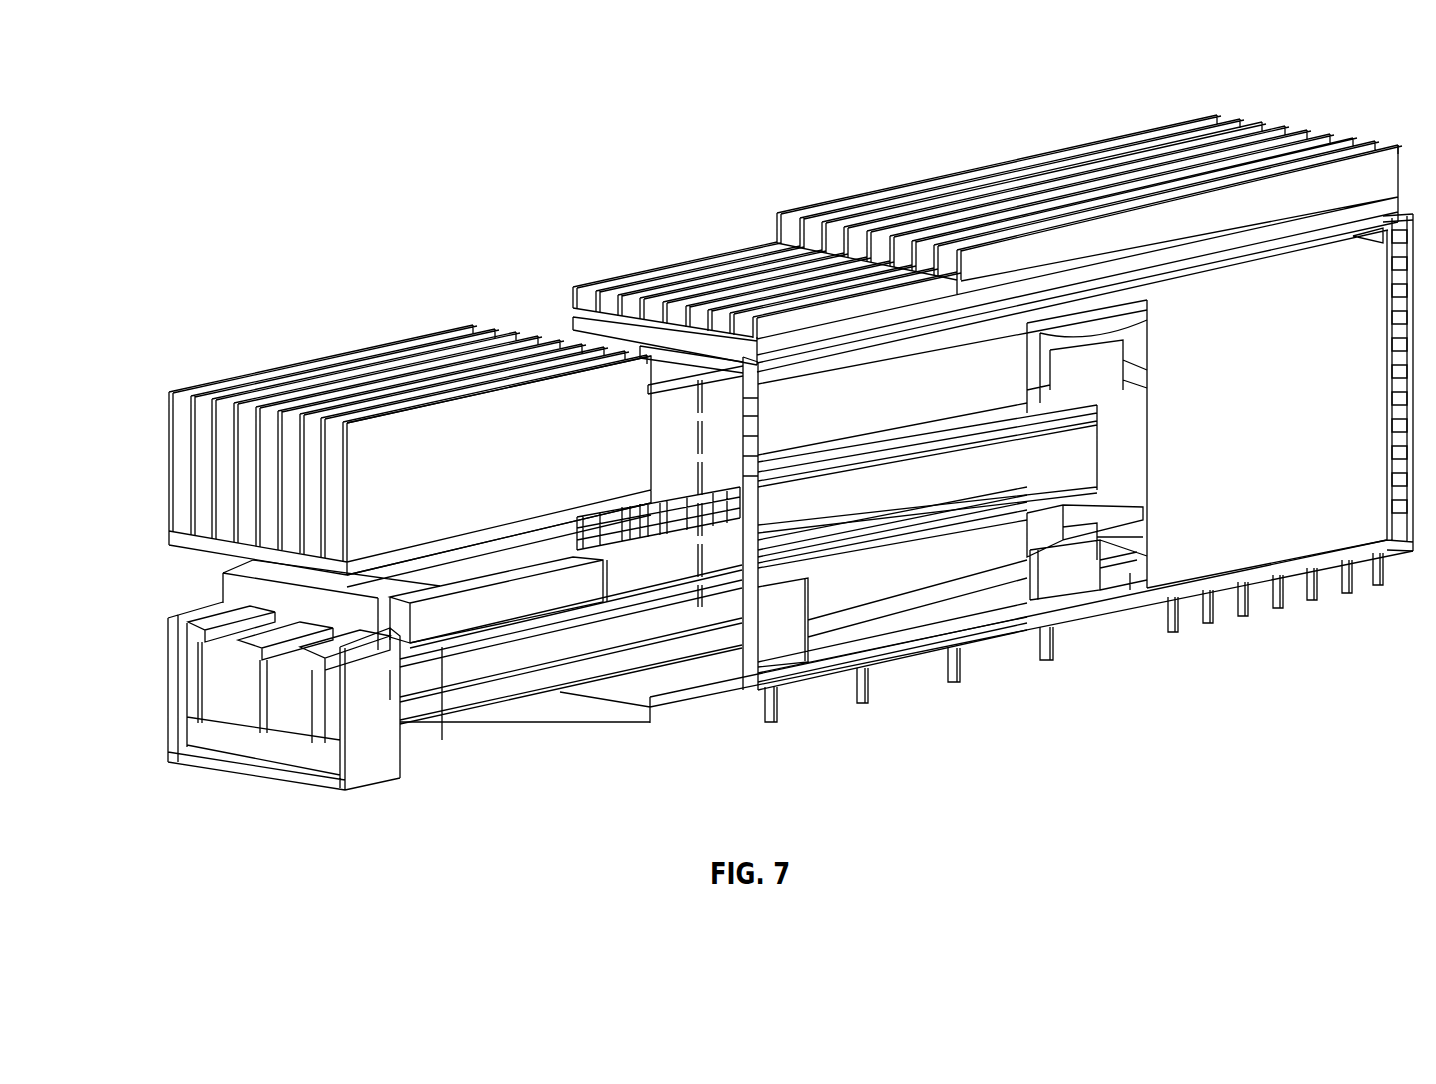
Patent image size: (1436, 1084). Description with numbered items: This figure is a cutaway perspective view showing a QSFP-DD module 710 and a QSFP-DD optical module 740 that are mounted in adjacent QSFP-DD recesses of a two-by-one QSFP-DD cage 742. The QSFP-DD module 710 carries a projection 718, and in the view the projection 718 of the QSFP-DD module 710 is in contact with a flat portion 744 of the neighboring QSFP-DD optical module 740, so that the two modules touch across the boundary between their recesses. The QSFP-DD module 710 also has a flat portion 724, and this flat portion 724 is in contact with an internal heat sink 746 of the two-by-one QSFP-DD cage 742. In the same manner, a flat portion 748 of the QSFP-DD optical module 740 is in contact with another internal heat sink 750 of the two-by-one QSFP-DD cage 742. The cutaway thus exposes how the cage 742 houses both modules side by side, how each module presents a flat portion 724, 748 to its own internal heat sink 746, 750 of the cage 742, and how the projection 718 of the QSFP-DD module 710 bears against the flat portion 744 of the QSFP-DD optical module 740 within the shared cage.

The QSFP-DD module 710 is at (196, 488).
The projection 718 is at (437, 563).
The flat portion 724 is at (1103, 295).
The QSFP-DD optical module 740 is at (405, 730).
The 2×1 QSFP-DD cage 742 is at (1400, 500).
The flat portion 744 is at (530, 572).
The internal heat sink 746 is at (1180, 258).
The flat portion 748 is at (943, 535).
The internal heat sink 750 is at (808, 538).